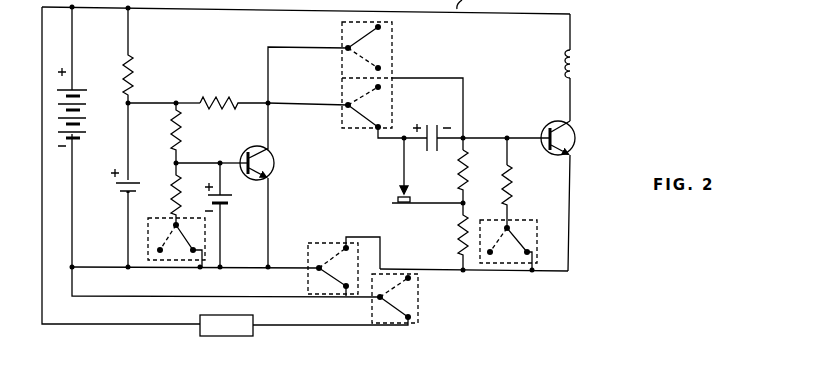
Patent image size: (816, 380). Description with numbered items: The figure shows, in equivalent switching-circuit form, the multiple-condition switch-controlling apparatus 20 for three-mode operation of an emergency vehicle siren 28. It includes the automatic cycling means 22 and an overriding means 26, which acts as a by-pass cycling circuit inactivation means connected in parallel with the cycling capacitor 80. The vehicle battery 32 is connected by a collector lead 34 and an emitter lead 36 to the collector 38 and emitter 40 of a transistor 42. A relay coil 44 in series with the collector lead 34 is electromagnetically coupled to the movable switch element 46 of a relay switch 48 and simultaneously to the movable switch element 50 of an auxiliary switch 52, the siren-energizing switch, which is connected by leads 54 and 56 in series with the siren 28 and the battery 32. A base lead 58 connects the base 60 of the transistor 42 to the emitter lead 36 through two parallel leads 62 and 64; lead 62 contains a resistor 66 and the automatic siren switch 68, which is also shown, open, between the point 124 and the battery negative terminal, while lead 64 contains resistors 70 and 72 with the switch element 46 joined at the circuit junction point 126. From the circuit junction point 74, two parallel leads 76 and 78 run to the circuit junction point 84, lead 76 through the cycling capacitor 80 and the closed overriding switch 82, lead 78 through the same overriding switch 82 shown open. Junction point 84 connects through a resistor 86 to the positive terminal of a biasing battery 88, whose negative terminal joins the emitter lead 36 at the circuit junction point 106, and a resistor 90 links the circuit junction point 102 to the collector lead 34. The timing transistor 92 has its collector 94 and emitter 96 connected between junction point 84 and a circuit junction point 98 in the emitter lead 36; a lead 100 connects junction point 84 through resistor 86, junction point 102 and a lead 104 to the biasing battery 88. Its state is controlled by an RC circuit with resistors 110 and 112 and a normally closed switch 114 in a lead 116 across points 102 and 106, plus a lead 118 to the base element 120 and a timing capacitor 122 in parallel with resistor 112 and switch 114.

The multiple-condition switch-controlling apparatus 20 is at (598, 75).
The automatic cycling means 22 is at (534, 379).
The overriding means 26 is at (418, 72).
The siren 28 is at (198, 335).
The battery 32 is at (92, 100).
The collector lead 34 is at (440, 379).
The emitter lead 36 is at (215, 269).
The collector 38 is at (568, 132).
The emitter 40 is at (566, 150).
The transistor 42 is at (580, 140).
The relay coil 44 is at (575, 62).
The movable switch element 46 is at (393, 203).
The relay switch 48 is at (395, 190).
The movable switch element 50 is at (403, 305).
The auxiliary switch 52 is at (408, 296).
The lead 54 is at (117, 298).
The lead 56 is at (92, 326).
The base lead 58 is at (526, 136).
The base 60 is at (548, 130).
The lead 62 is at (509, 154).
The lead 64 is at (466, 152).
The resistor 66 is at (510, 182).
The automatic siren switch 68 is at (518, 238).
The resistor 70 is at (466, 178).
The resistor 72 is at (456, 232).
The circuit junction point 74 is at (466, 136).
The lead 76 is at (404, 136).
The lead 78 is at (447, 78).
The cycling capacitor 80 is at (430, 122).
The overriding switch 82 is at (372, 42).
The circuit junction point 84 is at (270, 103).
The resistor 86 is at (224, 99).
The biasing battery 88 is at (112, 192).
The resistor 90 is at (138, 54).
The timing transistor 92 is at (252, 142).
The collector 94 is at (272, 150).
The emitter 96 is at (277, 164).
The circuit junction point 98 is at (270, 266).
The lead 100 is at (188, 102).
The circuit junction point 102 is at (134, 100).
The lead 104 is at (128, 135).
The circuit junction point 106 is at (124, 270).
The resistor 110 is at (172, 120).
The resistor 112 is at (172, 210).
The normally closed switch 114 is at (182, 262).
The lead 116 is at (172, 156).
The lead 118 is at (223, 177).
The base element 120 is at (244, 156).
The timing capacitor 122 is at (238, 205).
The point 124 is at (465, 272).
The circuit junction point 126 is at (458, 200).